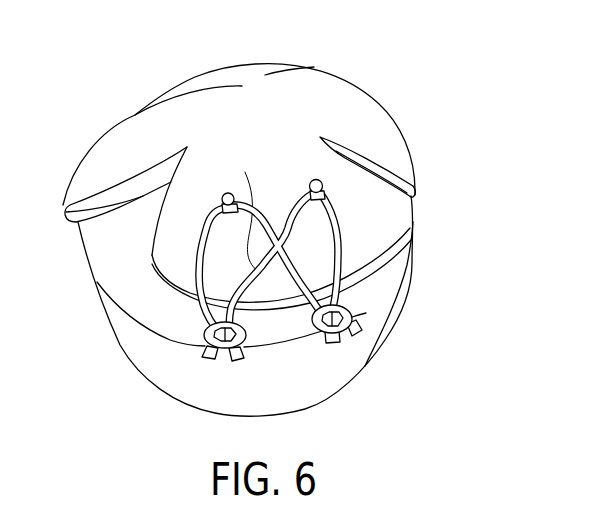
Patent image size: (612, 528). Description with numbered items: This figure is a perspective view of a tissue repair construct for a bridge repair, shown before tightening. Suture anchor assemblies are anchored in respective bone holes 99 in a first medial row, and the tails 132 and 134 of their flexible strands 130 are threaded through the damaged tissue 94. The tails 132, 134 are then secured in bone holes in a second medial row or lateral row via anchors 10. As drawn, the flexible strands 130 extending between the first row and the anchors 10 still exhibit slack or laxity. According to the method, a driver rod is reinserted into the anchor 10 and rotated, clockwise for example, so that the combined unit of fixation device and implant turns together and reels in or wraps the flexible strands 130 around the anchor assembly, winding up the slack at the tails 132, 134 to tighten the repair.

The damaged tissue 94 is at (276, 130).
The bone hole 99 is at (219, 194).
The flexible strand 130 is at (350, 208).
The tail of the flexible strand 132 is at (348, 253).
The tail of the flexible strand 134 is at (245, 212).
The anchor 10 is at (354, 309).